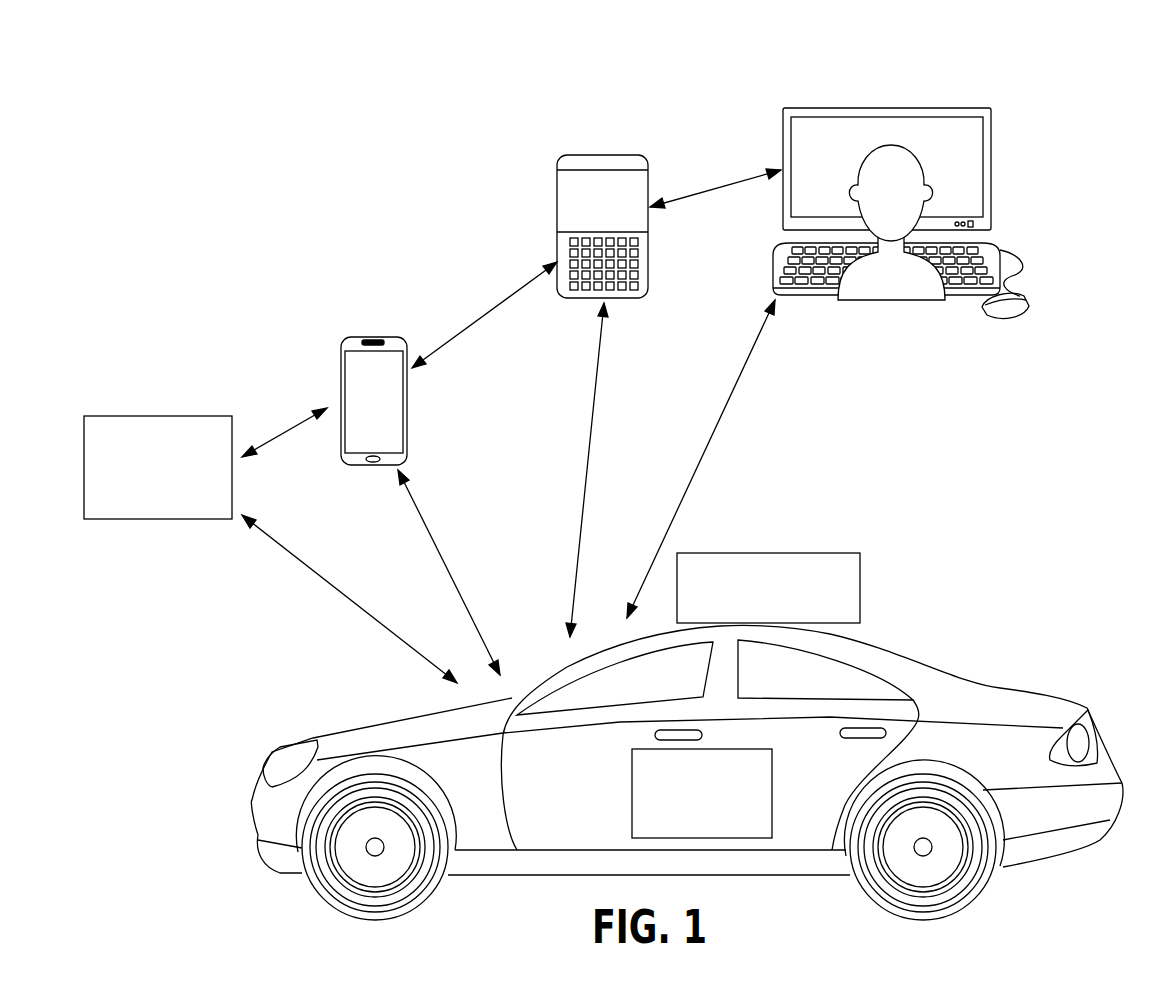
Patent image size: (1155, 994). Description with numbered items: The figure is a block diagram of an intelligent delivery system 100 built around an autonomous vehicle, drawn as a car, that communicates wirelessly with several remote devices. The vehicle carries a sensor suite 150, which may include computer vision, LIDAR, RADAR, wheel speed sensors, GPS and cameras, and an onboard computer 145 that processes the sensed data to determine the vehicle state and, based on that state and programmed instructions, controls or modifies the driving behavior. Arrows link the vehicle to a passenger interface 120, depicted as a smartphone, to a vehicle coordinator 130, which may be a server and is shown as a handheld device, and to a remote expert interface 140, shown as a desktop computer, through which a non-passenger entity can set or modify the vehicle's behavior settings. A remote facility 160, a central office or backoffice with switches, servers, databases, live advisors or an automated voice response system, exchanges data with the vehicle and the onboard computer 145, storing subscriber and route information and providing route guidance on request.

The intelligent delivery system 100 is at (1094, 103).
The passenger interface 120 is at (372, 337).
The vehicle coordinator 130 is at (588, 155).
The remote expert interface 140 is at (814, 108).
The onboard computer 145 is at (702, 793).
The sensor suite 150 is at (768, 588).
The remote facility 160 is at (158, 467).